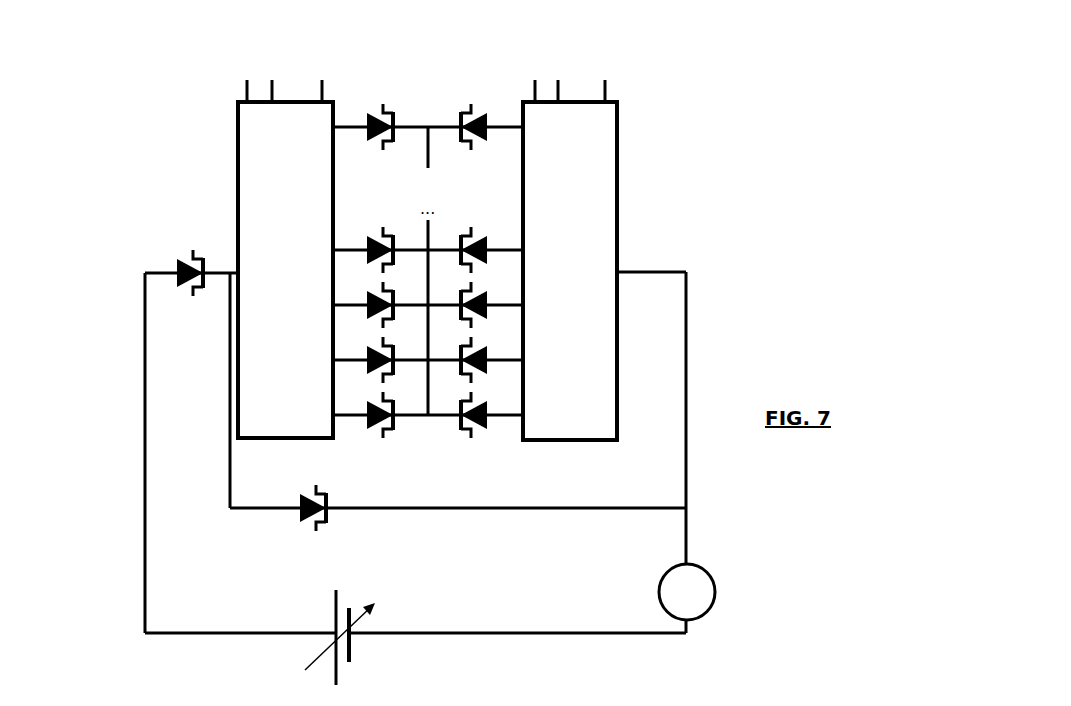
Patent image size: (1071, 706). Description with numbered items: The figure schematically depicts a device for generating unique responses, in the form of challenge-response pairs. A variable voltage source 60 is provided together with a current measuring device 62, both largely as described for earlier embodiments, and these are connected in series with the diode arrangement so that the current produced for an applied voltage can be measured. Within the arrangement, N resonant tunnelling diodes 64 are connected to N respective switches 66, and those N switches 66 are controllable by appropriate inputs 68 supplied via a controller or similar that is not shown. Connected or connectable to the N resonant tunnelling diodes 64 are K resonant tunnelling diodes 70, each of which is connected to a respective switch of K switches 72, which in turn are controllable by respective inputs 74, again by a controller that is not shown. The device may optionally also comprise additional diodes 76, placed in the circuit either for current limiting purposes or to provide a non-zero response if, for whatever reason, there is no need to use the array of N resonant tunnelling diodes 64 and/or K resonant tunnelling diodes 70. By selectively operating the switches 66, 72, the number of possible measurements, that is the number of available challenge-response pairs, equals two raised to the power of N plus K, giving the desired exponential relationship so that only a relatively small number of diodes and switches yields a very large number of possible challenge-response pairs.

The variable voltage source 60 is at (328, 596).
The current measuring device 62 is at (723, 577).
The N resonant tunnelling diodes 64 is at (447, 465).
The N switches 66 is at (232, 180).
The inputs 68 is at (223, 58).
The K resonant tunnelling diodes 70 is at (495, 440).
The K switches 72 is at (630, 183).
The inputs 74 is at (623, 63).
The additional diodes 76 is at (412, 562).